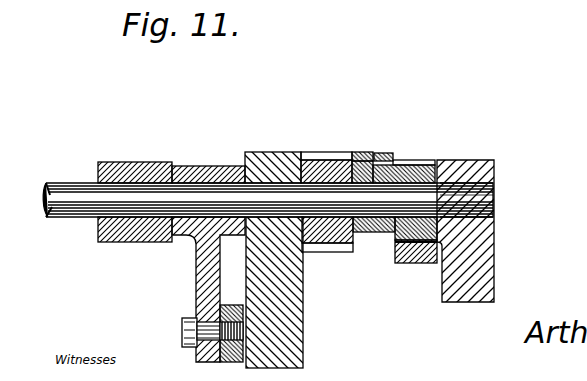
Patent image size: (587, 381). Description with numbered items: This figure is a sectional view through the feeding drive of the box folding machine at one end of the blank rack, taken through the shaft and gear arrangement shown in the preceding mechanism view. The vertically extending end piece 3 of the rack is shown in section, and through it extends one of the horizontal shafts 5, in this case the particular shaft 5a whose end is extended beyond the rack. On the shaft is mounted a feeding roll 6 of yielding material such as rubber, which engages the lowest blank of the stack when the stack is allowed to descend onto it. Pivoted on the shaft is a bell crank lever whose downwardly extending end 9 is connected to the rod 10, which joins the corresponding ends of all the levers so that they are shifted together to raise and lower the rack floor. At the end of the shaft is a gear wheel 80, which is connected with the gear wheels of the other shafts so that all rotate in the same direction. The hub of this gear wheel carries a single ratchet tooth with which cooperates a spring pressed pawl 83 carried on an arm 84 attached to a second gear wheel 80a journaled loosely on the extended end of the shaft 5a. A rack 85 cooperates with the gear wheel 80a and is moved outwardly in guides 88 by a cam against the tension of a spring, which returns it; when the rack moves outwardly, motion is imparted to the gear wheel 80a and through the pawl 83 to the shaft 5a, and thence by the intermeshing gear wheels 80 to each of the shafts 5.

The end piece 3 is at (273, 162).
The shaft 5 is at (82, 204).
The shaft 5a is at (489, 195).
The feeding roll 6 is at (135, 166).
The downwardly extending end 9 is at (203, 272).
The rod 10 is at (230, 305).
The gear wheel 80 is at (328, 247).
The gear wheel 80a is at (419, 167).
The spring pressed pawl 83 is at (363, 153).
The arm 84 is at (387, 232).
The rack 85 is at (415, 252).
The guide 88 is at (484, 258).